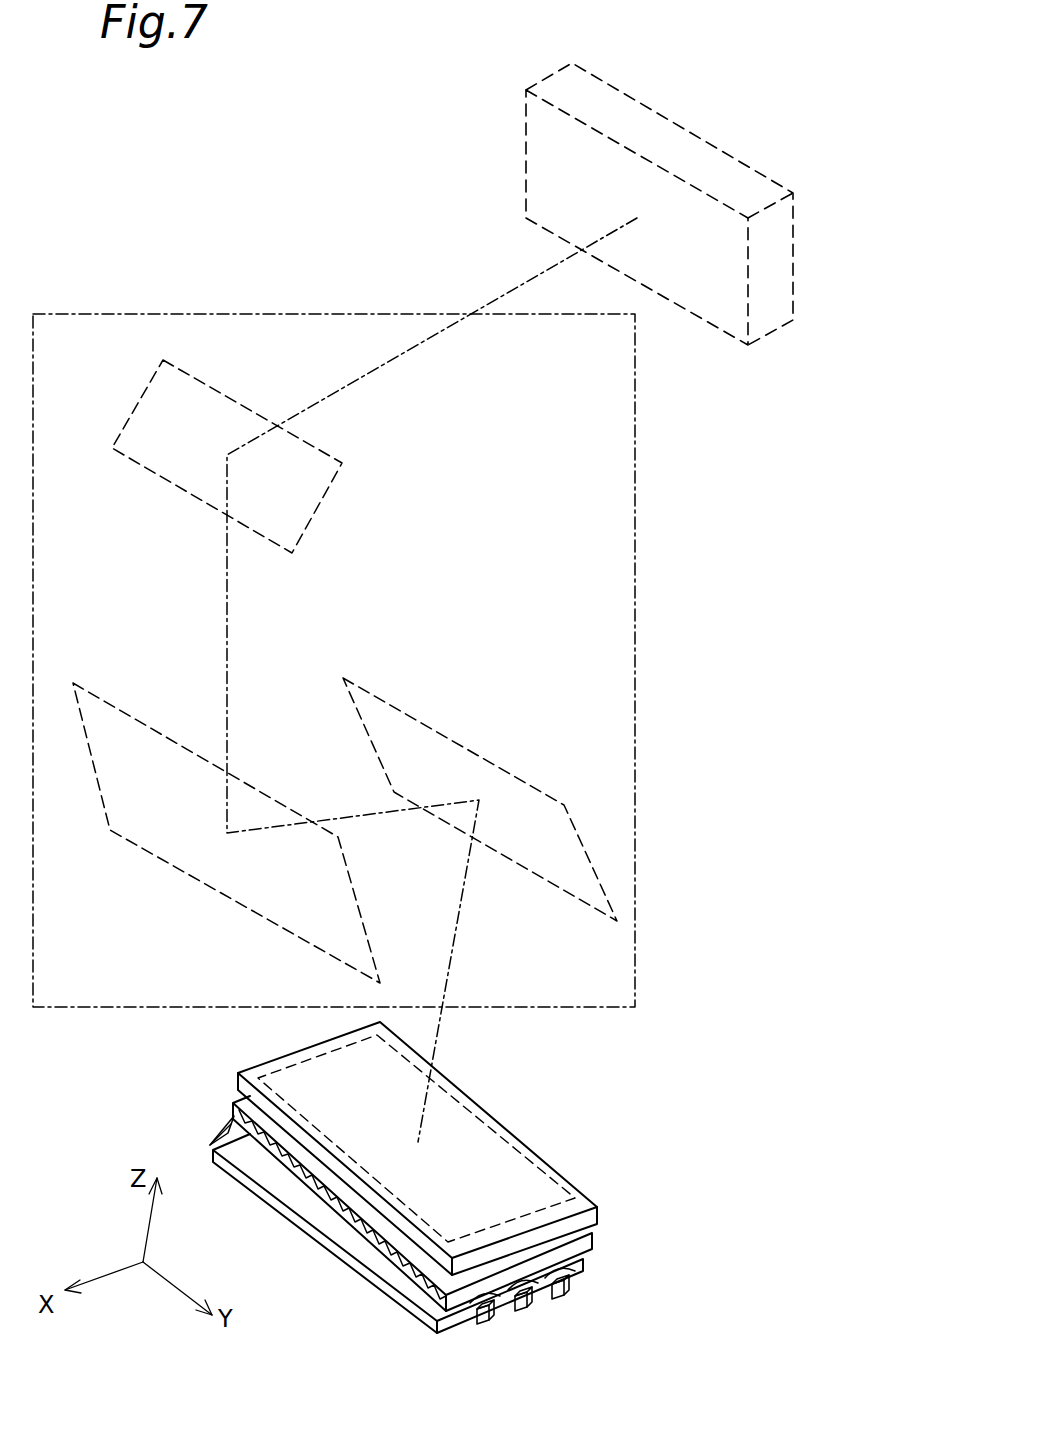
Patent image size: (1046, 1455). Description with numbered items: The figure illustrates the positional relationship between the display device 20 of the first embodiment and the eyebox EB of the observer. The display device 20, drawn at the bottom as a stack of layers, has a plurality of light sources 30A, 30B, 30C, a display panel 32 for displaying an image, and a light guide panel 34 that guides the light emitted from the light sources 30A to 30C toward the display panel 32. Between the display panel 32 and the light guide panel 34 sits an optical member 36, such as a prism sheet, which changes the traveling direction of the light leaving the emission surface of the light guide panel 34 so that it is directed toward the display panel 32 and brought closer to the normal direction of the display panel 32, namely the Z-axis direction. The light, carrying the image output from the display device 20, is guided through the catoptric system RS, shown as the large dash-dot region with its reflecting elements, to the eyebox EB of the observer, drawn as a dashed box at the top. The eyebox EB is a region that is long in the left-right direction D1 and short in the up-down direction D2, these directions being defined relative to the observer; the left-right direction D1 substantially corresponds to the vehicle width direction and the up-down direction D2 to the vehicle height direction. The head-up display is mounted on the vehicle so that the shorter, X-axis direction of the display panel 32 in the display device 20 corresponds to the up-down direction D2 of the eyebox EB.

The eyebox EB is at (527, 141).
The left-right direction D1 is at (795, 158).
The up-down direction D2 is at (825, 215).
The catoptric system RS is at (636, 645).
The display device 20 is at (548, 1126).
The display panel 32 is at (582, 1200).
The light guide panel 34 is at (288, 1198).
The optical member 36 is at (233, 1108).
The light source 30A is at (483, 1323).
The light source 30B is at (523, 1311).
The light source 30C is at (562, 1299).